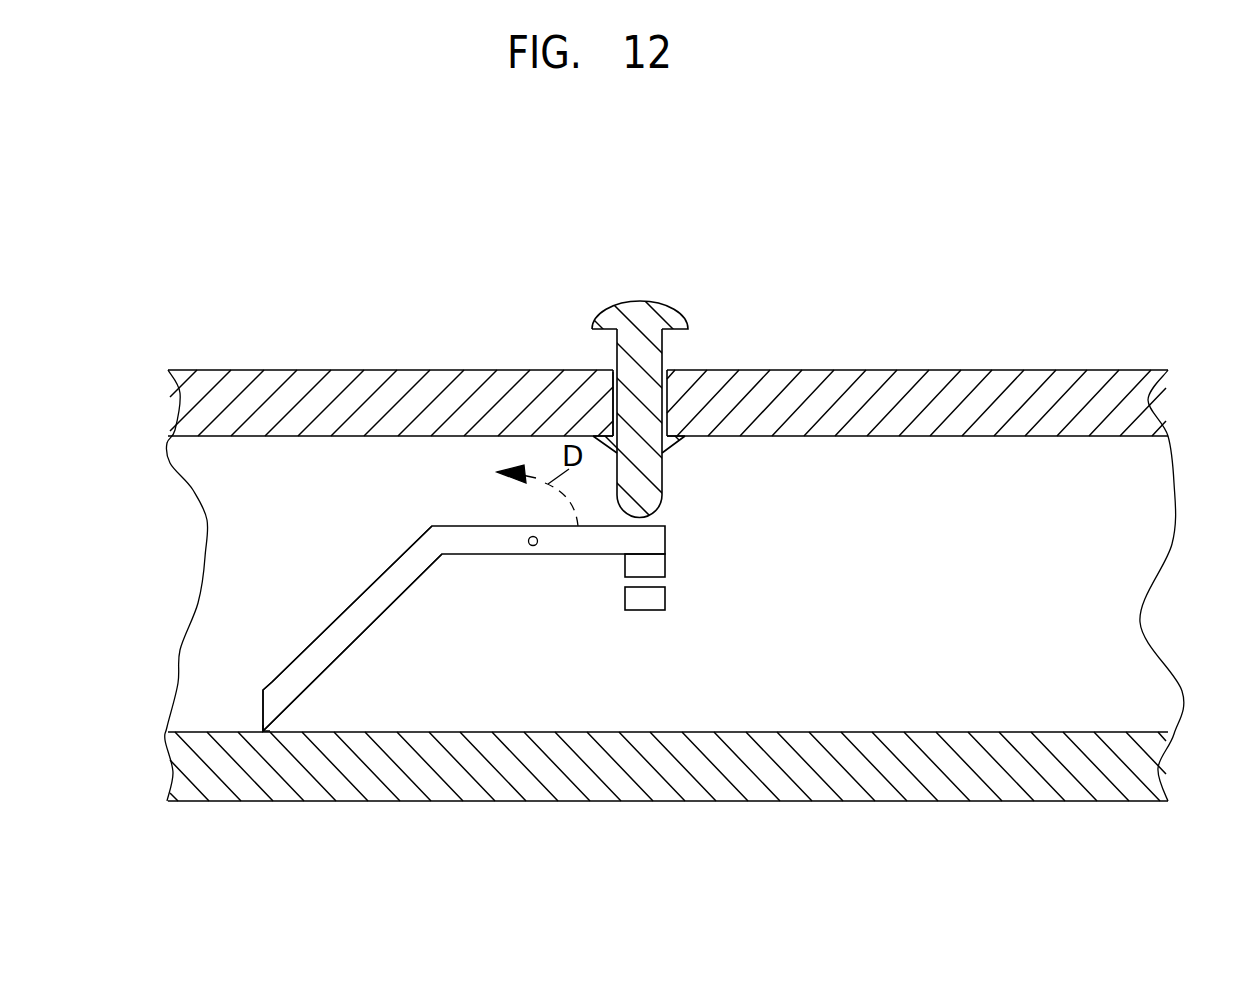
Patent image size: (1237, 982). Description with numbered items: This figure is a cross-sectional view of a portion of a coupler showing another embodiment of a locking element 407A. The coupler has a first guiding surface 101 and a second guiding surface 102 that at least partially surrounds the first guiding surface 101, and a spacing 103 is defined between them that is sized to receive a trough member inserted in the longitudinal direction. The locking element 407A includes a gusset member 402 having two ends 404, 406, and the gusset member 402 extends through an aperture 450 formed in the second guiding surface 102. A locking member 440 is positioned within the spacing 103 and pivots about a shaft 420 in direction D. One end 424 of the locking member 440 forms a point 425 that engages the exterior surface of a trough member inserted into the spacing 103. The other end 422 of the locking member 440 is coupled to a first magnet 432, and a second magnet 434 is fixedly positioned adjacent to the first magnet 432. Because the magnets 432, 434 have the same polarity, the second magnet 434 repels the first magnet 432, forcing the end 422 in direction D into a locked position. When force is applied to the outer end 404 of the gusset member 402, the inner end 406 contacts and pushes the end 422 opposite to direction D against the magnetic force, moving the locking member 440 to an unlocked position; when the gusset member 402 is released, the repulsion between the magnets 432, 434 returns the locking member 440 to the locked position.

The first guiding surface 101 is at (458, 770).
The second guiding surface 102 is at (830, 396).
The spacing 103 is at (962, 591).
The gusset member 402 is at (662, 348).
The end 404 is at (642, 302).
The end 406 is at (662, 490).
The locking element 407A is at (631, 344).
The shaft 420 is at (534, 546).
The end 422 is at (660, 540).
The end 424 is at (283, 677).
The point 425 is at (263, 731).
The first magnet 432 is at (654, 567).
The second magnet 434 is at (657, 598).
The locking member 440 is at (360, 610).
The aperture 450 is at (614, 388).